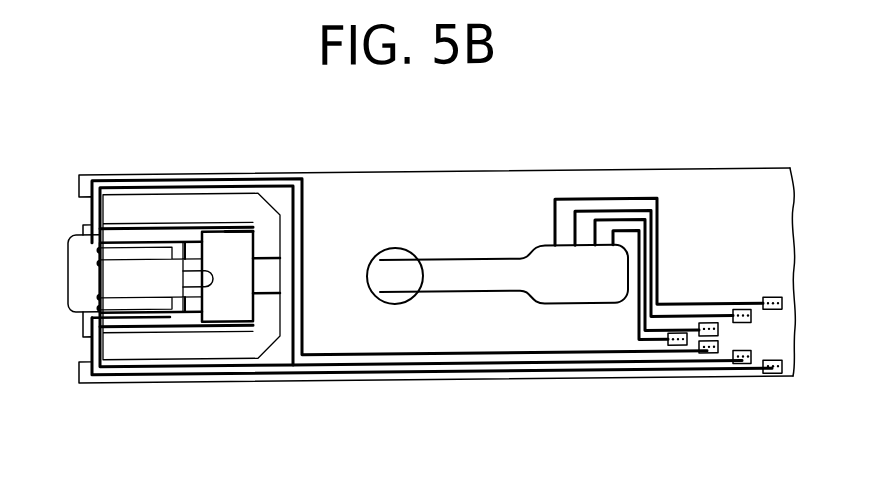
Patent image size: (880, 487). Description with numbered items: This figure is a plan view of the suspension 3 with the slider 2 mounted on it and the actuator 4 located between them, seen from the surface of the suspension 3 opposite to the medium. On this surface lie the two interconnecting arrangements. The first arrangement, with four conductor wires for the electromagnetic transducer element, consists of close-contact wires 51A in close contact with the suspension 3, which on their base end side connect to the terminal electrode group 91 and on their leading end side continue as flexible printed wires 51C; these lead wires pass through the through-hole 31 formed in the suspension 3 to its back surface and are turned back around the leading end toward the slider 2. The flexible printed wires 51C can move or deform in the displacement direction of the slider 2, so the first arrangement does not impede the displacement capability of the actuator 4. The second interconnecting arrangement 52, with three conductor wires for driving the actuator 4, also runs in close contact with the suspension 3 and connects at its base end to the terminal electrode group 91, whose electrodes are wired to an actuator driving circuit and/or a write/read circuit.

The slider 2 is at (100, 280).
The suspension 3 is at (714, 176).
The actuator 4 is at (228, 260).
The through-hole 31 is at (396, 256).
The close-contact wires 51A is at (612, 225).
The flexible printed wires 51C is at (512, 281).
The second interconnecting arrangement 52 is at (532, 377).
The terminal electrode group 91 is at (780, 390).